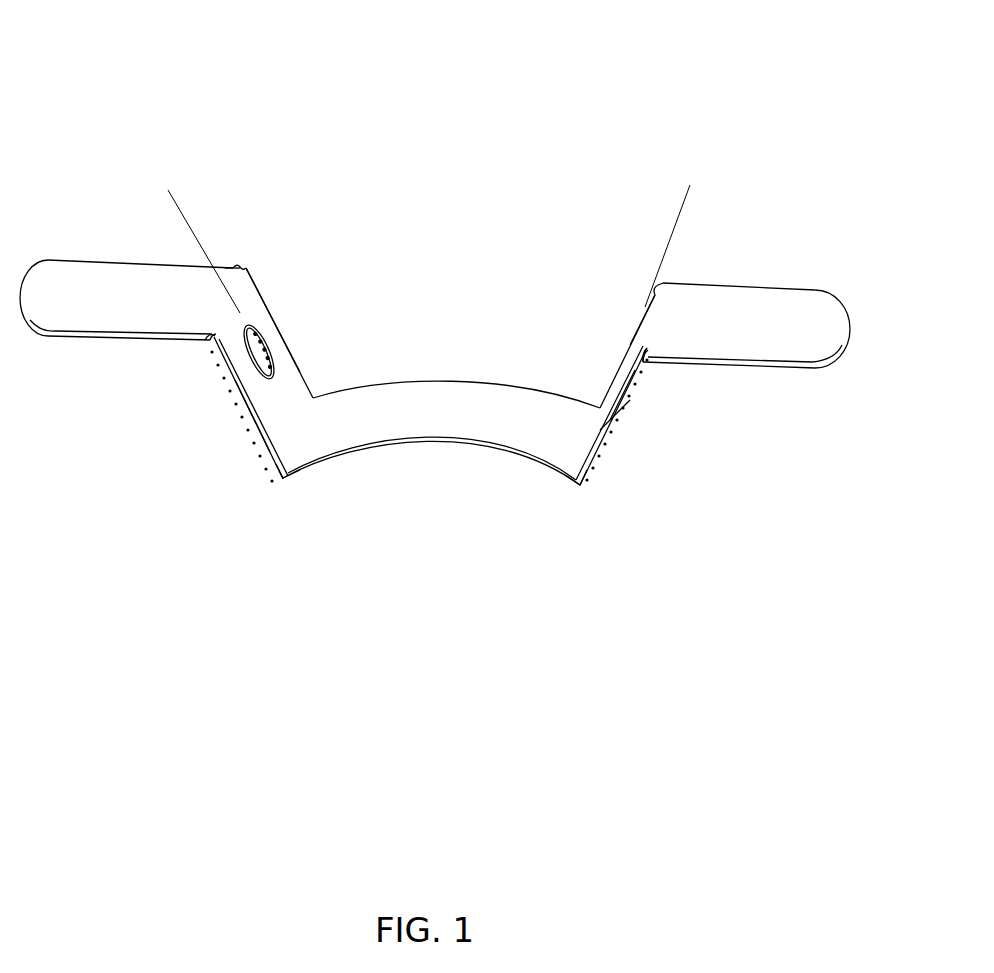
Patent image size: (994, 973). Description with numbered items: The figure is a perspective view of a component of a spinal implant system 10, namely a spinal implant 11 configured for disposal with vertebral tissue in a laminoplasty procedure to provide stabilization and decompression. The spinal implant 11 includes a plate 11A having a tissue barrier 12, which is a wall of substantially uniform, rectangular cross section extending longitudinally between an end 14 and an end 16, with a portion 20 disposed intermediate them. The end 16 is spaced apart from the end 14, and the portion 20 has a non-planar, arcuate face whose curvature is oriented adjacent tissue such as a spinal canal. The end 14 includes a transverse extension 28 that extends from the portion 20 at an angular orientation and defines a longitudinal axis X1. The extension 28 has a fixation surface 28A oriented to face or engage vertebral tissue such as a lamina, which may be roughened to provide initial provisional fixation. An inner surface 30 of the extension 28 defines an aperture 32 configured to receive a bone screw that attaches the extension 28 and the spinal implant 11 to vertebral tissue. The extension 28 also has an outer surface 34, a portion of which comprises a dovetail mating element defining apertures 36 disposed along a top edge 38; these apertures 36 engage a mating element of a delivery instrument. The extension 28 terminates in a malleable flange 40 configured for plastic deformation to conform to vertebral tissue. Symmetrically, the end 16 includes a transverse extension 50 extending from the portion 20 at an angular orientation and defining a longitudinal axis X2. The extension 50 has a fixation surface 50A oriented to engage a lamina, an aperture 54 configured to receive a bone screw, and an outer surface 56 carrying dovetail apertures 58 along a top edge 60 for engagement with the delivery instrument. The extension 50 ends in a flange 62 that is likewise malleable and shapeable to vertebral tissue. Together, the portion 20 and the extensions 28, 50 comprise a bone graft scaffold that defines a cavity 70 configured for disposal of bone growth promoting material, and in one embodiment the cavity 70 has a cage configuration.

The spinal implant system 10 is at (719, 54).
The spinal implant 11 is at (112, 73).
The plate 11A is at (327, 553).
The tissue barrier 12 is at (439, 462).
The end 14 is at (283, 482).
The end 16 is at (581, 487).
The portion 20 is at (436, 400).
The transverse extension 28 is at (248, 478).
The surface 28A is at (250, 414).
The inner surface 30 is at (277, 369).
The aperture 32 is at (253, 357).
The outer surface 34 is at (257, 277).
The apertures 36 is at (240, 266).
The top edge 38 is at (248, 266).
The flange 40 is at (75, 277).
The transverse extension 50 is at (622, 448).
The surface 50A is at (630, 380).
The aperture 54 is at (617, 383).
The outer surface 56 is at (623, 408).
The apertures 58 is at (657, 297).
The top edge 60 is at (637, 323).
The flange 62 is at (770, 313).
The cavity 70 is at (552, 296).
The longitudinal axis X1 is at (191, 242).
The longitudinal axis X2 is at (685, 234).